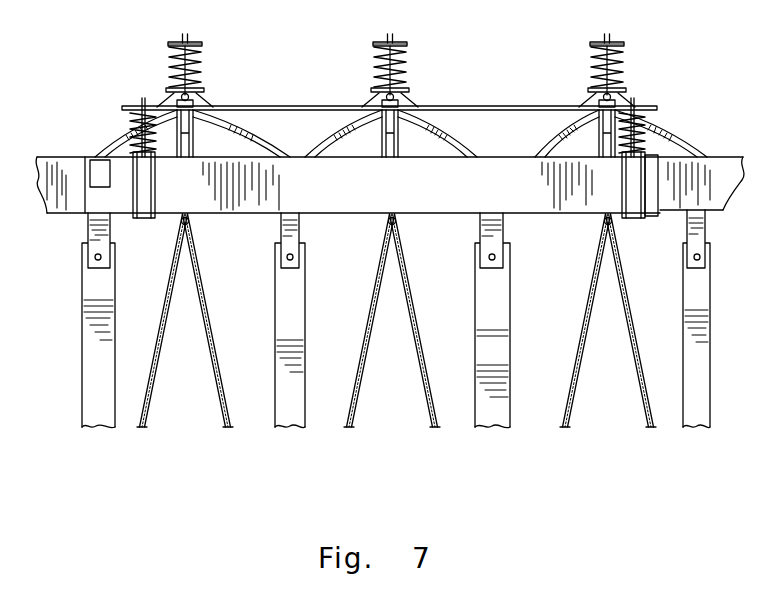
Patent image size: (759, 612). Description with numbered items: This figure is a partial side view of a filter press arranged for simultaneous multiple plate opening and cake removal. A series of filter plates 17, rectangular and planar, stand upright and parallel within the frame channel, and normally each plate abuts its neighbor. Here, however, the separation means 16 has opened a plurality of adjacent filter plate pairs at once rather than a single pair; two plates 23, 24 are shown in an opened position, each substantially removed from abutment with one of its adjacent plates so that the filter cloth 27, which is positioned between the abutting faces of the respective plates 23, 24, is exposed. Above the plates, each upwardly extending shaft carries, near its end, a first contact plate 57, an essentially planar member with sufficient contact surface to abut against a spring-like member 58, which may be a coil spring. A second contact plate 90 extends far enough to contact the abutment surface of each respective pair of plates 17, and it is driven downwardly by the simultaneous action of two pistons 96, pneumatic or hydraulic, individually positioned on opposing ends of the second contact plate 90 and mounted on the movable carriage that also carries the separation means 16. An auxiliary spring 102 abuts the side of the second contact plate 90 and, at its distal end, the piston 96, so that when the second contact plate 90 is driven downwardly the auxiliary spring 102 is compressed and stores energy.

The separation means 16 is at (87, 165).
The filter plates 17 is at (109, 296).
The filter plate 23 is at (283, 390).
The filter plate 24 is at (95, 412).
The filter cloth 27 is at (215, 371).
The first contact plate 57 is at (203, 43).
The spring-like member 58 is at (203, 72).
The second contact plate 90 is at (292, 106).
The piston 96 is at (146, 187).
The auxiliary spring 102 is at (119, 130).